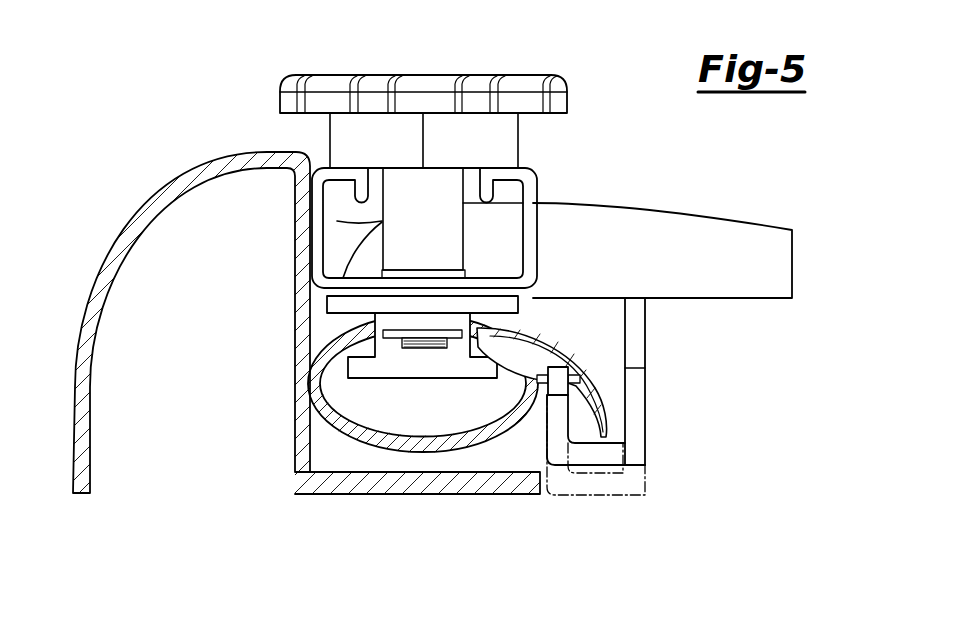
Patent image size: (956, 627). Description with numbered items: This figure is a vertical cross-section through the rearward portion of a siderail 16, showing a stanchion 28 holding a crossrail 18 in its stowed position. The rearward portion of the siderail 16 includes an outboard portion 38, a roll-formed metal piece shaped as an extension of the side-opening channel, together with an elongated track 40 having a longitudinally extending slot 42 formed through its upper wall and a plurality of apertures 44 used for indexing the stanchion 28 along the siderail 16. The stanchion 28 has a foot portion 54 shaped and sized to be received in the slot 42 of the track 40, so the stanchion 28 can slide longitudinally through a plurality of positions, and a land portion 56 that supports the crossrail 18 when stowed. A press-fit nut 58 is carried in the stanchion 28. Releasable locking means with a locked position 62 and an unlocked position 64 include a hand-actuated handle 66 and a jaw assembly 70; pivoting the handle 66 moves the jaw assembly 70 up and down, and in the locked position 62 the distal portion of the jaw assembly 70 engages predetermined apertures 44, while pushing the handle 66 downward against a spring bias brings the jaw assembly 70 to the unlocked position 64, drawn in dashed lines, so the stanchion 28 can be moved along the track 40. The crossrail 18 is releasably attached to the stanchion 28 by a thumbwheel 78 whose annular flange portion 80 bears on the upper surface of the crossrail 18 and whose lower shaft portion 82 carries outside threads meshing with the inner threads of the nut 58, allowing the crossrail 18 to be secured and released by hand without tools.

The siderail 16 is at (146, 151).
The outboard portion 38 is at (192, 183).
The elongated track 40 is at (307, 482).
The stanchion 28 is at (636, 134).
The longitudinally extending slot 42 is at (308, 352).
The foot portion 54 is at (366, 367).
The press-fit nut 58 is at (442, 334).
The shaft portion 82 is at (431, 346).
The apertures 44 is at (543, 373).
The locked position 62 is at (557, 384).
The jaw assembly 70 is at (645, 397).
The unlocked position 64 is at (550, 496).
The hand-actuated handle 66 is at (687, 232).
The land portion 56 is at (533, 296).
The crossrail 18 is at (531, 173).
The annular flange portion 80 is at (337, 221).
The thumbwheel 78 is at (408, 75).